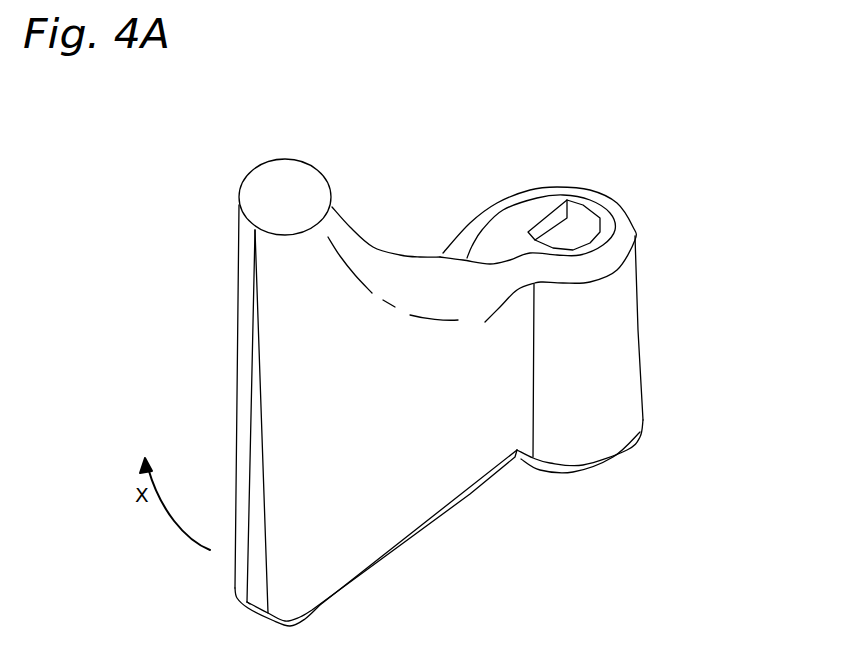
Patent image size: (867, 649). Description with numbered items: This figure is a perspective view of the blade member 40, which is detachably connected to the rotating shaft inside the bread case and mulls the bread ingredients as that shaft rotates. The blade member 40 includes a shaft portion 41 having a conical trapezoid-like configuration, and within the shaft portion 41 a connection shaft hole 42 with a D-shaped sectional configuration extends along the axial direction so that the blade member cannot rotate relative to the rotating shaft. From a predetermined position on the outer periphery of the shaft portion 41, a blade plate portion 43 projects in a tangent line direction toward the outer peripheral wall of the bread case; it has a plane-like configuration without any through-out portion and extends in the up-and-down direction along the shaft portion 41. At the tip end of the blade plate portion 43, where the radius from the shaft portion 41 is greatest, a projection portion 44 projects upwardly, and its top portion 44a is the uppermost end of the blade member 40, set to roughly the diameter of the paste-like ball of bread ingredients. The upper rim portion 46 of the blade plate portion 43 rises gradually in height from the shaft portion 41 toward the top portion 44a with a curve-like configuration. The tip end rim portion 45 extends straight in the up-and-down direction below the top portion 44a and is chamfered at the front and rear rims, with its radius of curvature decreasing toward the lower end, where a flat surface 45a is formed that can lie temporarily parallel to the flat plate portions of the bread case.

The blade member 40 is at (660, 180).
The shaft portion 41 is at (625, 333).
The connection shaft hole 42 is at (563, 235).
The blade plate portion 43 is at (382, 497).
The projection portion 44 is at (243, 280).
The top portion 44a is at (280, 175).
The tip end rim portion 45 is at (250, 367).
The flat surface 45a is at (252, 568).
The upper rim portion 46 is at (368, 240).